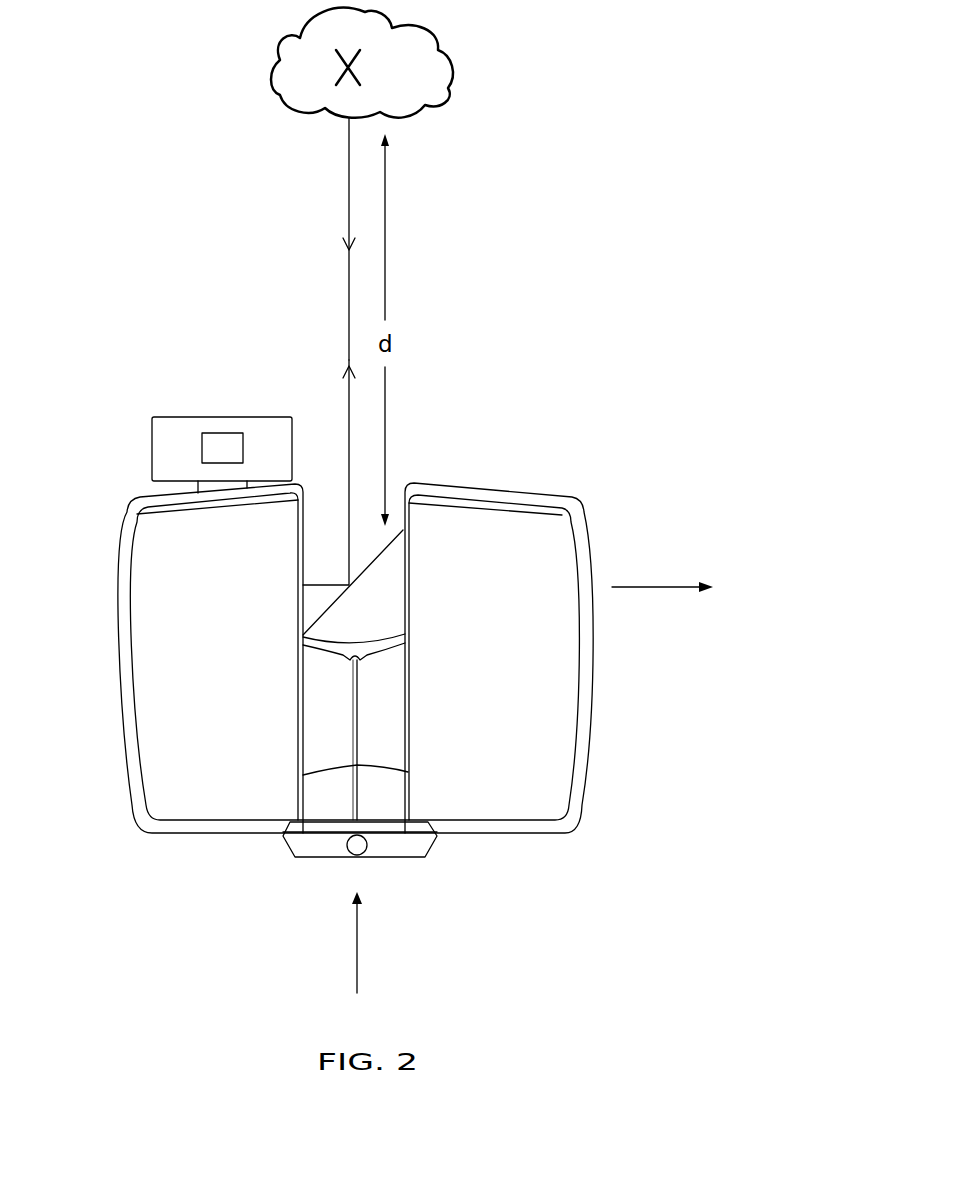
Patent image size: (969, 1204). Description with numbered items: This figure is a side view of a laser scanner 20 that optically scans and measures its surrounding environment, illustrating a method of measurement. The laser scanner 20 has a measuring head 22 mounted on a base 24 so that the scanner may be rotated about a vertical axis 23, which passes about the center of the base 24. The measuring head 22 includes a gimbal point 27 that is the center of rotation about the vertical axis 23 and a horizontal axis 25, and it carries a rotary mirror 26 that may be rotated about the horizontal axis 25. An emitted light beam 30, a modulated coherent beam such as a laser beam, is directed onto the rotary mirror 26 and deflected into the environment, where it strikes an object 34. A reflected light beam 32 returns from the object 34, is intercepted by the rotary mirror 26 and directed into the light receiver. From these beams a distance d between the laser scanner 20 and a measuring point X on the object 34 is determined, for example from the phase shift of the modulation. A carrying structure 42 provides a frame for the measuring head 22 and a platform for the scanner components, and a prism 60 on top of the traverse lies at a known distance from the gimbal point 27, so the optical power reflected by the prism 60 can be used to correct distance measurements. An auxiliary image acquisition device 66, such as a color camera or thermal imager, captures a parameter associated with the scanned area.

The laser scanner 20 is at (193, 172).
The measuring head 22 is at (570, 430).
The vertical axis 23 is at (360, 967).
The base 24 is at (290, 850).
The horizontal axis 25 is at (648, 586).
The rotary mirror 26 is at (332, 612).
The gimbal point 27 is at (352, 588).
The emitted light beam 30 is at (347, 395).
The reflected light beam 32 is at (347, 218).
The object 34 is at (436, 28).
The carrying structure 42 is at (452, 887).
The prism 60 is at (358, 657).
The auxiliary image acquisition device 66 is at (180, 377).